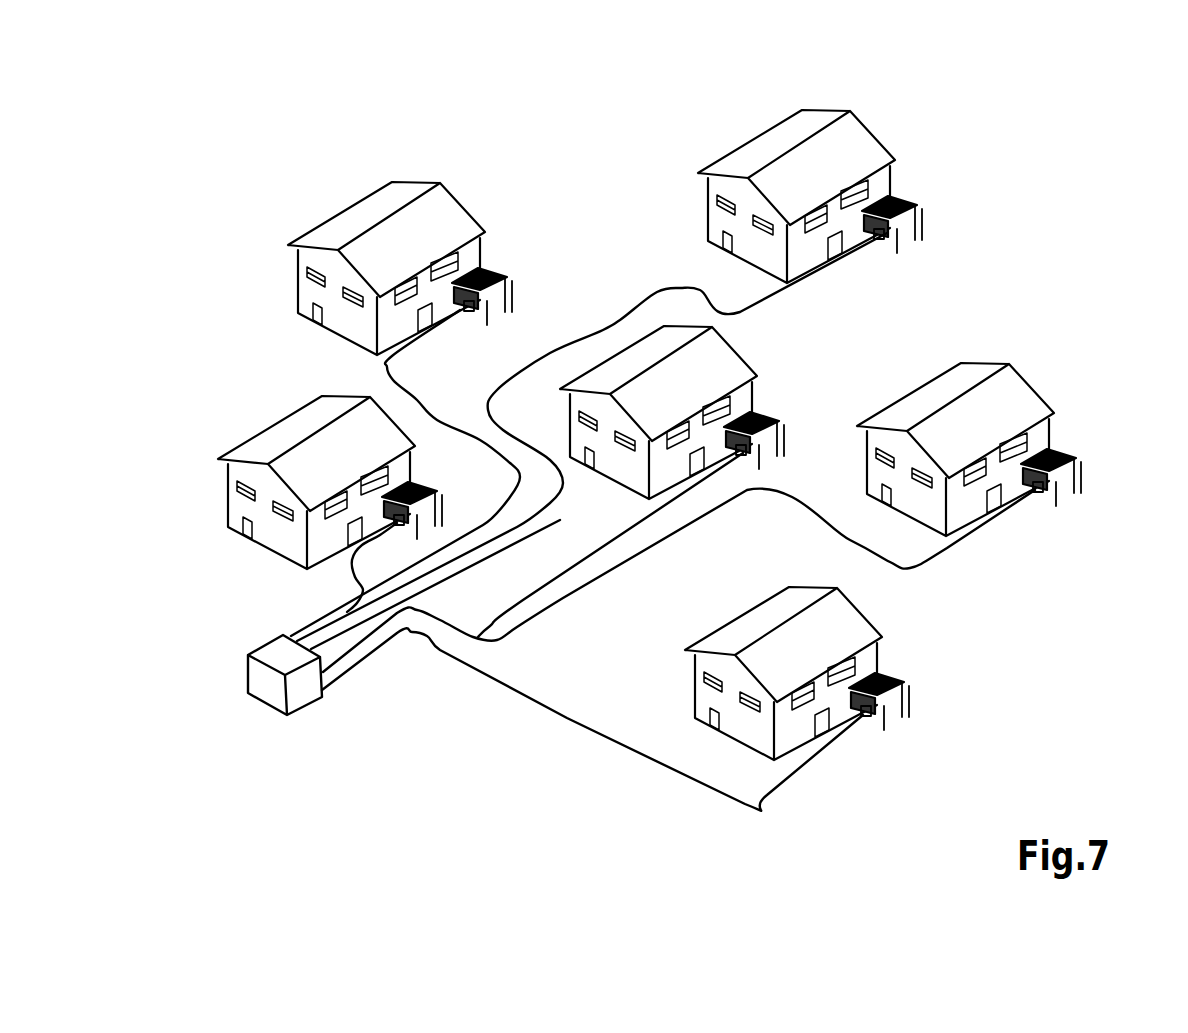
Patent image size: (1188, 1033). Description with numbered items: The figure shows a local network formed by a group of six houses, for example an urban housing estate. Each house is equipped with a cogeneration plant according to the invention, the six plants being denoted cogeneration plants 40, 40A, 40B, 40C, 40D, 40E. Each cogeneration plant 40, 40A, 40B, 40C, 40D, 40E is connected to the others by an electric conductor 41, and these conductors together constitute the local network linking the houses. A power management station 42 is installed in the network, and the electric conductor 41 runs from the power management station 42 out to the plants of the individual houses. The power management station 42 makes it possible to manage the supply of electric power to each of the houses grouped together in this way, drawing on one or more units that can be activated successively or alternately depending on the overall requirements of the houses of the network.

The cogeneration plant 40 is at (467, 308).
The cogeneration plant 40A is at (897, 250).
The cogeneration plant 40B is at (1063, 497).
The cogeneration plant 40C is at (887, 728).
The cogeneration plant 40D is at (785, 473).
The cogeneration plant 40E is at (450, 521).
The electric conductor 41 is at (650, 290).
The power management station 42 is at (263, 687).